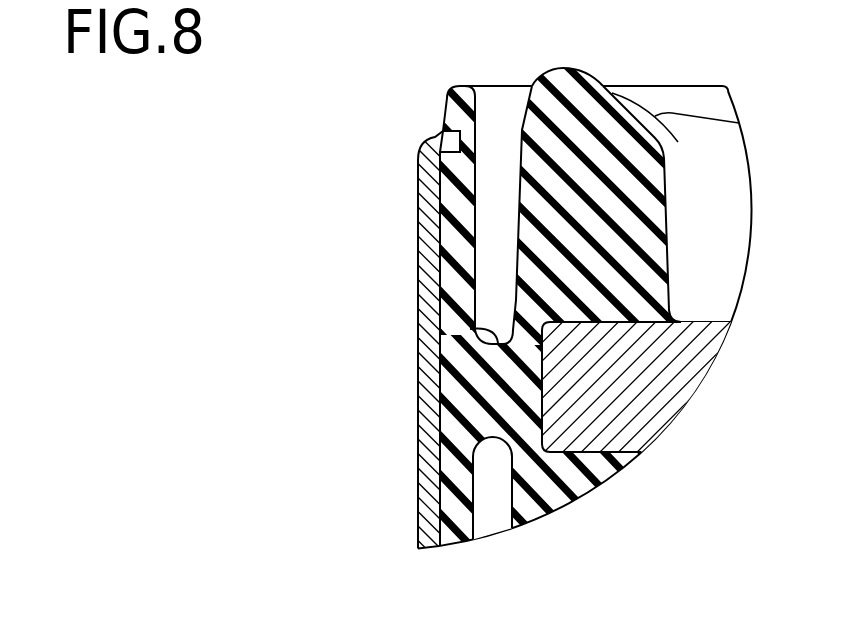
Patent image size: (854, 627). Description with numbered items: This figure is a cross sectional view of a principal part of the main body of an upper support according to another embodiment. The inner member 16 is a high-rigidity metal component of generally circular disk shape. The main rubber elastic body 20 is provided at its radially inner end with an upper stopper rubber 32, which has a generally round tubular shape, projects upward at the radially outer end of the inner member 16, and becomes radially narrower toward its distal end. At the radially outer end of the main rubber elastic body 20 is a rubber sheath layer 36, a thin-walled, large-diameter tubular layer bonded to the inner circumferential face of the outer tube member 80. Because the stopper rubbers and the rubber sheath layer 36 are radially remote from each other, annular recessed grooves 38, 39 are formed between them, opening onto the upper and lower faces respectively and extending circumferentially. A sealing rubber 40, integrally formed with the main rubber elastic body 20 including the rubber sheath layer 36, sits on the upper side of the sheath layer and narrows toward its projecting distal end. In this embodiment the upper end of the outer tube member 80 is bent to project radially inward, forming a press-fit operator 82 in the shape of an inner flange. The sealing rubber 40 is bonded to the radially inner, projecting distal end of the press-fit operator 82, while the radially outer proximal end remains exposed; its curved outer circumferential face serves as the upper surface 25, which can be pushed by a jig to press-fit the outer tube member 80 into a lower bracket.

The inner member 16 is at (697, 318).
The main rubber elastic body 20 is at (542, 67).
The upper surface 25 is at (443, 131).
The upper stopper rubber 32 is at (597, 132).
The rubber sheath layer 36 is at (458, 195).
The annular recessed groove 38 is at (472, 329).
The annular recessed groove 39 is at (495, 437).
The sealing rubber 40 is at (458, 116).
The outer tube member 80 is at (413, 510).
The press-fit operator 82 is at (437, 152).